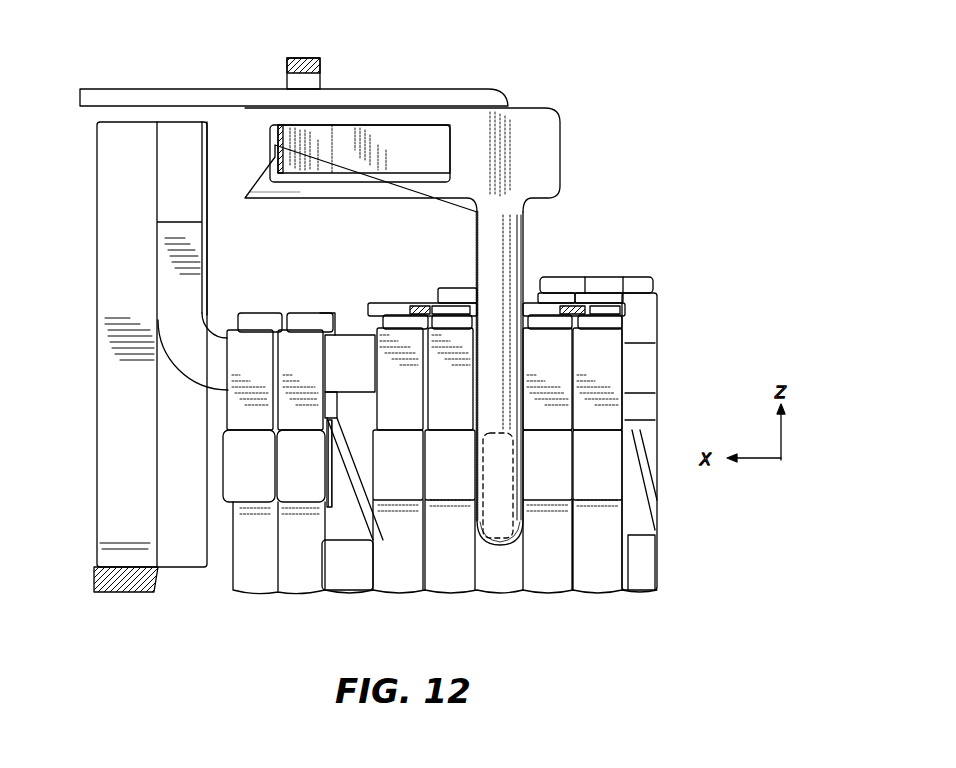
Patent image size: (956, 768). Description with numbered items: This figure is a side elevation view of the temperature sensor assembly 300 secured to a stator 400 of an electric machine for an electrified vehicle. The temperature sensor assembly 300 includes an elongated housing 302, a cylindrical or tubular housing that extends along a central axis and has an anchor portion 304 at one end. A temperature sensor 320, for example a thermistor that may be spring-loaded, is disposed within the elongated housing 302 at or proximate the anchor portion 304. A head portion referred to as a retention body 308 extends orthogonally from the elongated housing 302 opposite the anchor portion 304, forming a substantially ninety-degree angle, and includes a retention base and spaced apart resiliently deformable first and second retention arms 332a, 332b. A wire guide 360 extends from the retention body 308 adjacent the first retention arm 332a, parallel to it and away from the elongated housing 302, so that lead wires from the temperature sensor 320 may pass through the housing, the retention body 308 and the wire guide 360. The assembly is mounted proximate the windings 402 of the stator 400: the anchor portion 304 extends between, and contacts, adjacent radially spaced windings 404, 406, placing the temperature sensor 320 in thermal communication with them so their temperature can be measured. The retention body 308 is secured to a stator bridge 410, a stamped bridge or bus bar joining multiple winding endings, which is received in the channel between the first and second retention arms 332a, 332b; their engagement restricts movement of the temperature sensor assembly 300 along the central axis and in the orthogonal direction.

The temperature sensor assembly 300 is at (577, 104).
The elongated housing 302 is at (523, 247).
The anchor portion 304 is at (523, 473).
The retention body 308 is at (532, 107).
The temperature sensor 320 is at (472, 515).
The first retention arm 332a is at (352, 118).
The second retention arm 332b is at (295, 188).
The wire guide 360 is at (215, 88).
The stator 400 is at (750, 325).
The windings 402 is at (656, 262).
The winding 404 is at (450, 330).
The winding 406 is at (532, 298).
The stator bridge 410 is at (417, 150).